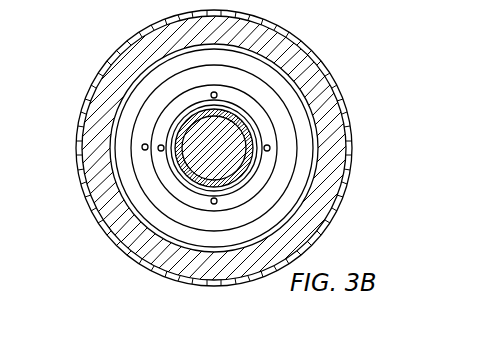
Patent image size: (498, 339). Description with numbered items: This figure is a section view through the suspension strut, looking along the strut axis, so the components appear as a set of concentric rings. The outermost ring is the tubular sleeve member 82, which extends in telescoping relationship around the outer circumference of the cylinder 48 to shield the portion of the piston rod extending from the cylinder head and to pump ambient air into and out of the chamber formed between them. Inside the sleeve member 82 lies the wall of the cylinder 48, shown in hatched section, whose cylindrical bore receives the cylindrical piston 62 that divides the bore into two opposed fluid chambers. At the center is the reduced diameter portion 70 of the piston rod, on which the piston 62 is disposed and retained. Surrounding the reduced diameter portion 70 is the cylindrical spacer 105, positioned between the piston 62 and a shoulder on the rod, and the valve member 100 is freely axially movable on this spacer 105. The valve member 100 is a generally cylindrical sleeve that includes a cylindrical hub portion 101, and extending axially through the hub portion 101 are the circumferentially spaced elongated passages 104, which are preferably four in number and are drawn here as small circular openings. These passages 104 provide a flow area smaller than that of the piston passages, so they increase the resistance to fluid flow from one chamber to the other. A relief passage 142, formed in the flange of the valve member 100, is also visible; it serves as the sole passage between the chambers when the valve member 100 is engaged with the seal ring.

The cylinder 48 is at (335, 148).
The piston 62 is at (277, 80).
The reduced diameter portion 70 is at (171, 156).
The sleeve member 82 is at (334, 70).
The valve member 100 is at (270, 142).
The hub portion 101 is at (175, 186).
The passages 104 is at (160, 143).
The spacer 105 is at (233, 107).
The relief passage 142 is at (142, 147).